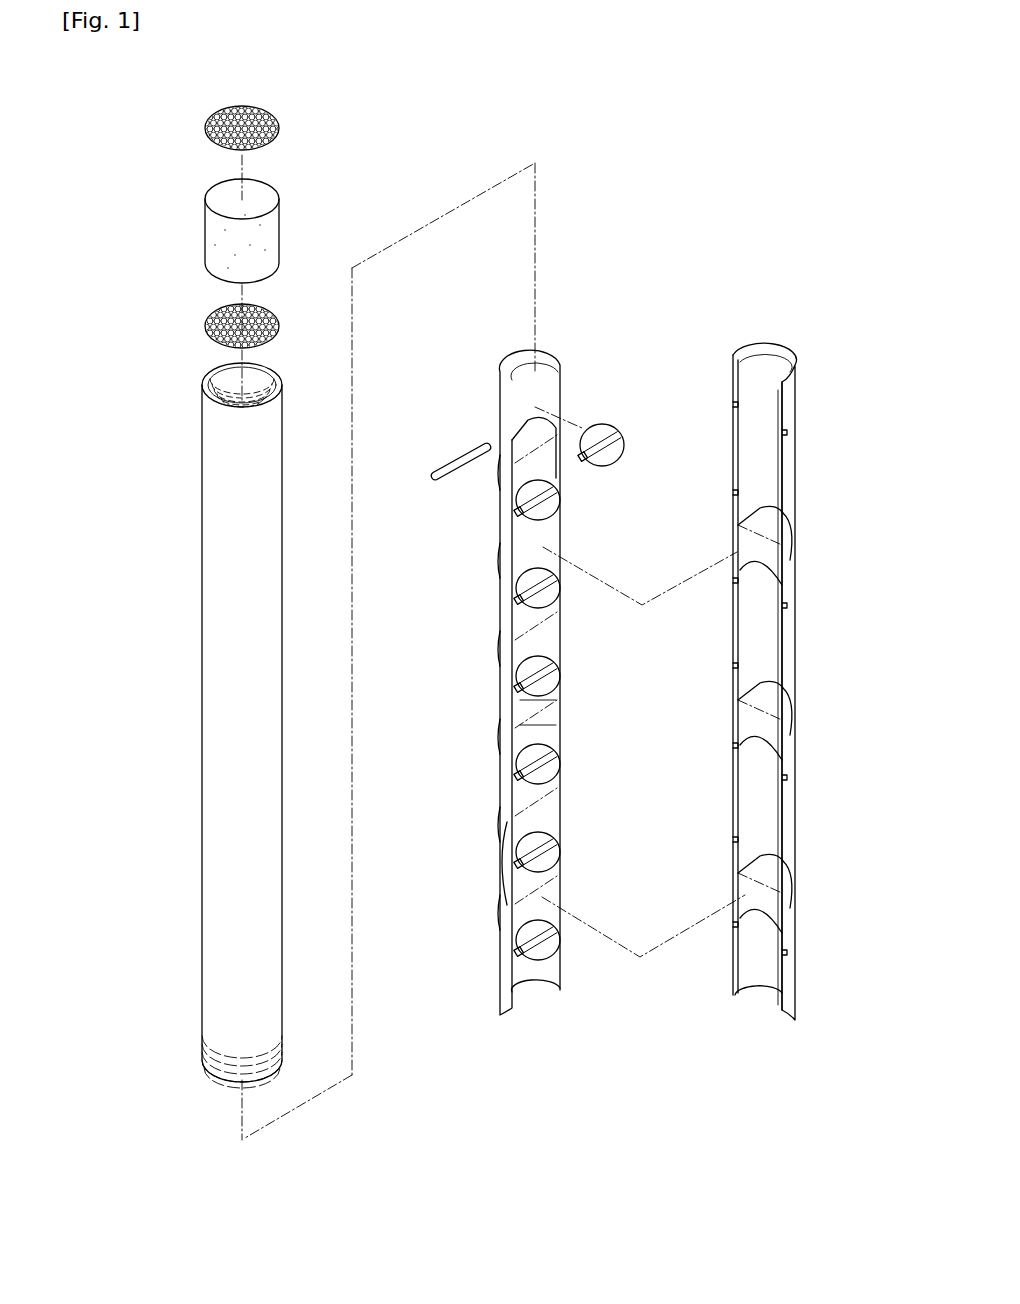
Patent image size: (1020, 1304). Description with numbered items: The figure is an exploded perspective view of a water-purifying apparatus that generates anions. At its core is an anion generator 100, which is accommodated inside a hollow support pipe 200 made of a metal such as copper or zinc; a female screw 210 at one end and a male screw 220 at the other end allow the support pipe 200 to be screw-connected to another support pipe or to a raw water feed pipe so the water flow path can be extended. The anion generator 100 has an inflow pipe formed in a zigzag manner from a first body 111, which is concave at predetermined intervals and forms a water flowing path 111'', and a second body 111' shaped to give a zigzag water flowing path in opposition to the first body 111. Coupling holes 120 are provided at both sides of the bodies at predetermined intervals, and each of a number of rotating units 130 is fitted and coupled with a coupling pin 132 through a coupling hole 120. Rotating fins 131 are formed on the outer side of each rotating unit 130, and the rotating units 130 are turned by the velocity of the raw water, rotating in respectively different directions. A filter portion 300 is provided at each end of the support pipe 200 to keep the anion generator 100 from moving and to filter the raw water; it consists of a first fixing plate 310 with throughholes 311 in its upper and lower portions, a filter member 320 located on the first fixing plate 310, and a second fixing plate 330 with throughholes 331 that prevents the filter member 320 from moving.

The anion generator 100 is at (786, 622).
The first body 111 is at (442, 863).
The second body 111' is at (753, 582).
The water flowing path 111'' is at (613, 712).
The coupling hole 120 is at (551, 662).
The rotating unit 130 is at (551, 635).
The rotating fin 131 is at (620, 460).
The coupling pin 132 is at (448, 478).
The support pipe 200 is at (173, 756).
The female screw 210 is at (205, 378).
The male screw 220 is at (235, 1080).
The filter portion 300 is at (198, 104).
The first fixing plate 310 is at (188, 321).
The throughhole 311 is at (215, 315).
The filter member 320 is at (228, 228).
The second fixing plate 330 is at (296, 105).
The throughhole 331 is at (267, 112).